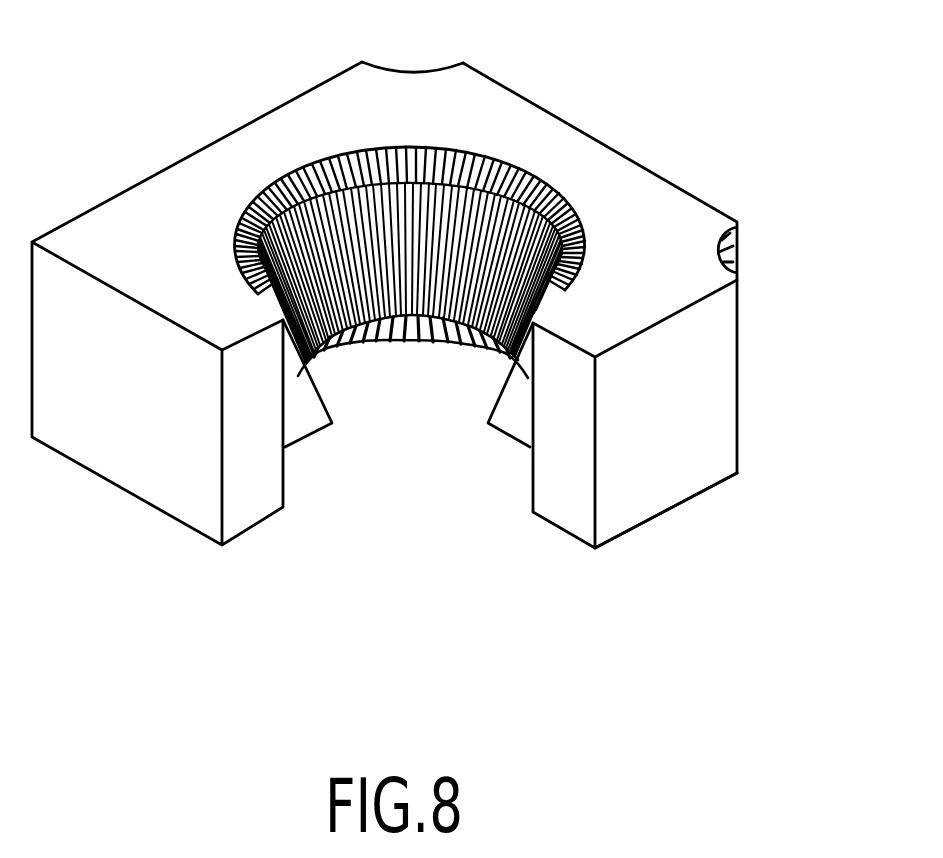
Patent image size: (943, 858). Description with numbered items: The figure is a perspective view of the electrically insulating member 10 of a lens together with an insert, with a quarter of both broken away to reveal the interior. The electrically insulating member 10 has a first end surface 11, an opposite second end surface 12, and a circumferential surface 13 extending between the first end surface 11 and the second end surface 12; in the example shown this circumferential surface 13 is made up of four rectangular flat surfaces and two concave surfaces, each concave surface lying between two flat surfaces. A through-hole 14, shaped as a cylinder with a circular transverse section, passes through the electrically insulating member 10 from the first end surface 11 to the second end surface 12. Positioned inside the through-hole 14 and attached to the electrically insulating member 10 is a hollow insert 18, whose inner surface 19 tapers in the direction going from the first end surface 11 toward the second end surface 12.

The electrically insulating member 10 is at (155, 212).
The first end surface 11 is at (637, 203).
The second end surface 12 is at (687, 493).
The circumferential surface 13 is at (688, 405).
The through-hole 14 is at (410, 377).
The hollow insert 18 is at (308, 413).
The inner surface 19 is at (352, 230).